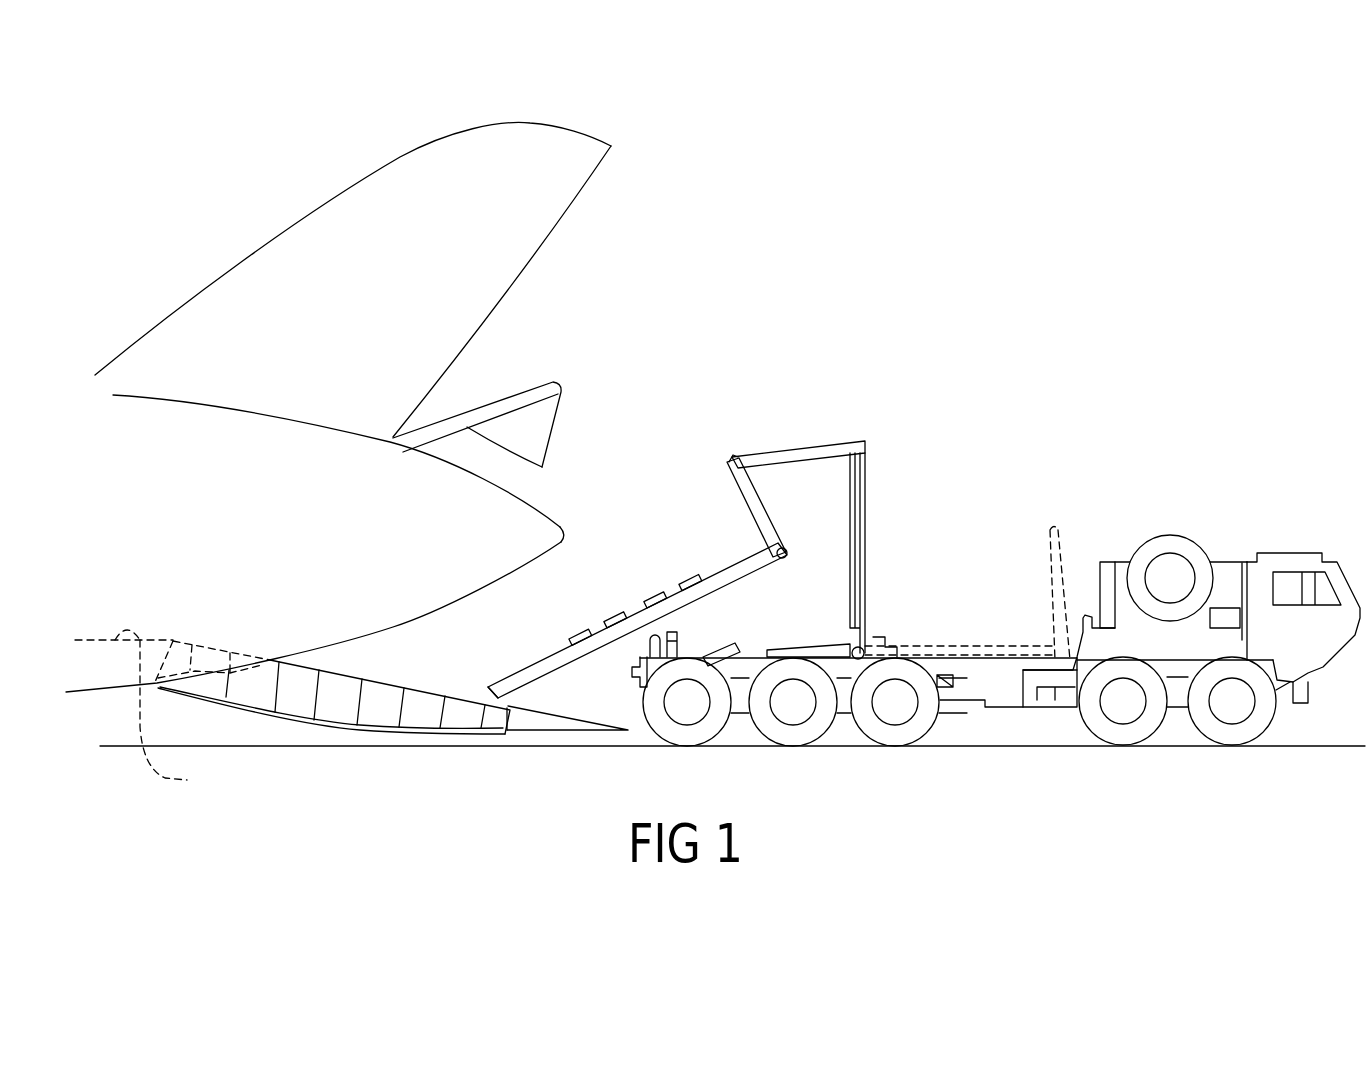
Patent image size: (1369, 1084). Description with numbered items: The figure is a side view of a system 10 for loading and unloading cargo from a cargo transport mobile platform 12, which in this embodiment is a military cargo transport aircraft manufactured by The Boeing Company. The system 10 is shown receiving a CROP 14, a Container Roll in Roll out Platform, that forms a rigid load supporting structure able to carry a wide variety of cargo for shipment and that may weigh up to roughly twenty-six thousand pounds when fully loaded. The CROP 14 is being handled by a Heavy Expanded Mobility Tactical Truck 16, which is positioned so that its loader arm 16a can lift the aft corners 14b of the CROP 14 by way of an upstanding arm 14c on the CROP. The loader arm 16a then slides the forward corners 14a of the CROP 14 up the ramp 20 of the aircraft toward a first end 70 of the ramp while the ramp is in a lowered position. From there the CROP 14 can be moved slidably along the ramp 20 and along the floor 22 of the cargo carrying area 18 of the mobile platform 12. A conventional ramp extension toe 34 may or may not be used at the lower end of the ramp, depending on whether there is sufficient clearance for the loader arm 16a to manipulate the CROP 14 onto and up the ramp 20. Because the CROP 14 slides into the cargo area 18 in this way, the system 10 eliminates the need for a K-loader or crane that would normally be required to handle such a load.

The system 10 is at (368, 678).
The cargo transport mobile platform 12 is at (543, 250).
The CROP 14 is at (673, 592).
The forward corners 14a is at (496, 702).
The aft corners 14b is at (781, 556).
The upstanding arm 14c is at (747, 497).
The Heavy Expanded Mobility Tactical Truck 16 is at (1280, 537).
The loader arm 16a is at (813, 453).
The cargo carrying area 18 is at (85, 628).
The ramp 20 is at (323, 708).
The floor 22 is at (205, 719).
The ramp extension toe 34 is at (583, 731).
The first end 70 is at (516, 722).